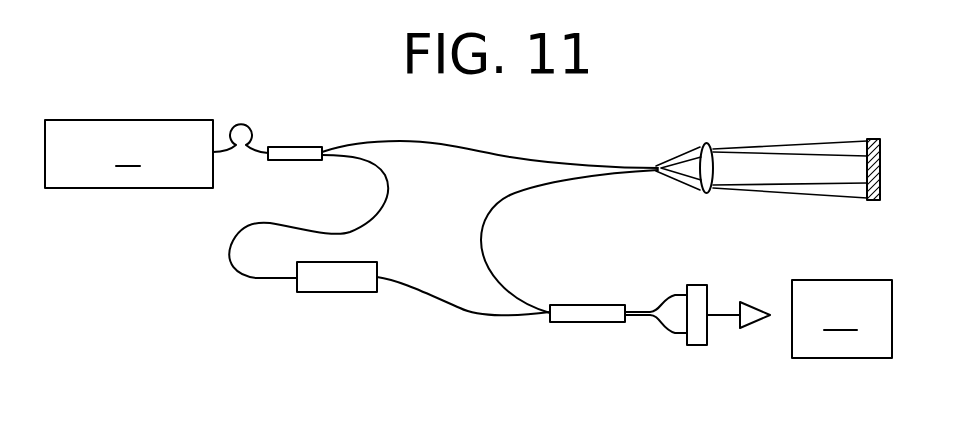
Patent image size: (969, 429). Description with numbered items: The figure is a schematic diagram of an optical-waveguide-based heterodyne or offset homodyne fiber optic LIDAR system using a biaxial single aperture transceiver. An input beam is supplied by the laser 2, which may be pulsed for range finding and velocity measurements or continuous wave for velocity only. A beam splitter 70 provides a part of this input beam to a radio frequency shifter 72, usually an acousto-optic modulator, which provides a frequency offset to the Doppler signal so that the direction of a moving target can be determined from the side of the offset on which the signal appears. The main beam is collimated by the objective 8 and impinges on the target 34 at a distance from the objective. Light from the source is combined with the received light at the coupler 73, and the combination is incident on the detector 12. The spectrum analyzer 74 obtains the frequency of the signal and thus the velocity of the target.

The laser 2 is at (129, 154).
The beam splitter 70 is at (293, 152).
The radio frequency shifter 72 is at (332, 285).
The coupler 73 is at (593, 318).
The objective 8 is at (722, 113).
The target 34 is at (874, 139).
The detector 12 is at (697, 291).
The spectrum analyzer 74 is at (842, 319).